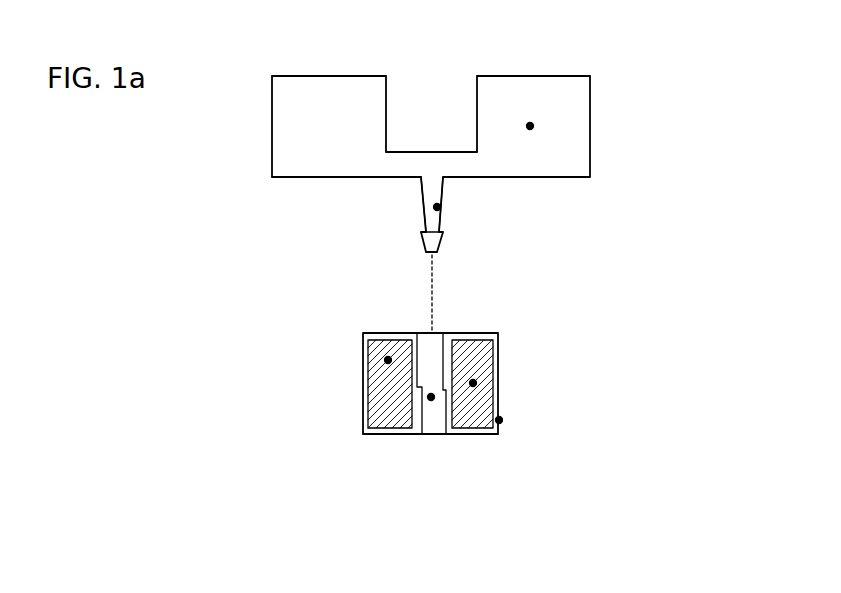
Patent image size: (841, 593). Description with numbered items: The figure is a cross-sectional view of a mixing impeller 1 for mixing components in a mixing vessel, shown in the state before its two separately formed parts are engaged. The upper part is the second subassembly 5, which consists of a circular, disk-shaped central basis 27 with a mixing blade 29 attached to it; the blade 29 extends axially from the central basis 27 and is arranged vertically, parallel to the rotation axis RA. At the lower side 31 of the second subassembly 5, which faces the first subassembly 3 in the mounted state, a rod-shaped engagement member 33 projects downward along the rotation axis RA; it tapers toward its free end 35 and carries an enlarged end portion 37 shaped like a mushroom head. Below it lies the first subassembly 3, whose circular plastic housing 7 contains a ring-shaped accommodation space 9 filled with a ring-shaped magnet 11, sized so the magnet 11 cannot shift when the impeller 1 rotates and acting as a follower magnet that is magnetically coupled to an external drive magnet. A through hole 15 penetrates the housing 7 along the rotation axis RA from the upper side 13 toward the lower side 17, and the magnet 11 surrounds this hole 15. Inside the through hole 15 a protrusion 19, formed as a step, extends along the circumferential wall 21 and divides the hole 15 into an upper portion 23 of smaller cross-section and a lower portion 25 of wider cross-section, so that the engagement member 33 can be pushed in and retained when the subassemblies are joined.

The mixing impeller 1 is at (310, 92).
The mixing blade 29 is at (333, 97).
The central basis 27 is at (397, 163).
The second subassembly 5 is at (530, 126).
The engagement member 33 is at (437, 207).
The lower side 31 is at (292, 177).
The enlarged end portion 37 is at (440, 233).
The free end 35 is at (437, 252).
The rotation axis RA is at (434, 287).
The upper side 13 is at (387, 332).
The upper portion 23 is at (427, 352).
The housing 7 is at (363, 353).
The accommodation space 9 is at (368, 400).
The magnet 11 is at (388, 360).
The through hole 15 is at (431, 397).
The first subassembly 3 is at (499, 420).
The lower side 17 is at (373, 435).
The protrusion 19 is at (425, 393).
The circumferential wall 21 is at (432, 420).
The lower portion 25 is at (443, 418).